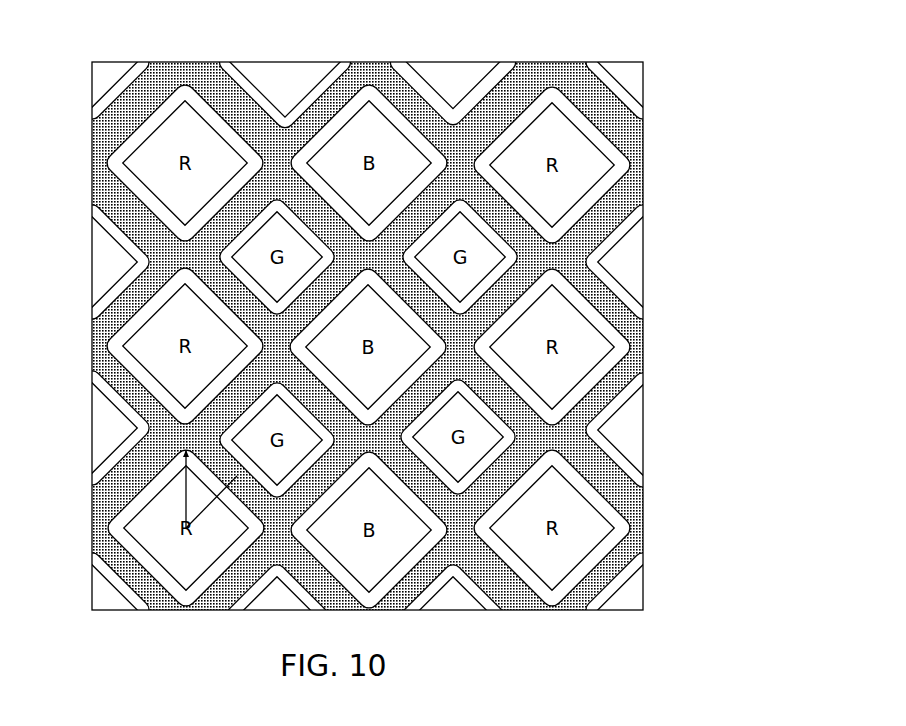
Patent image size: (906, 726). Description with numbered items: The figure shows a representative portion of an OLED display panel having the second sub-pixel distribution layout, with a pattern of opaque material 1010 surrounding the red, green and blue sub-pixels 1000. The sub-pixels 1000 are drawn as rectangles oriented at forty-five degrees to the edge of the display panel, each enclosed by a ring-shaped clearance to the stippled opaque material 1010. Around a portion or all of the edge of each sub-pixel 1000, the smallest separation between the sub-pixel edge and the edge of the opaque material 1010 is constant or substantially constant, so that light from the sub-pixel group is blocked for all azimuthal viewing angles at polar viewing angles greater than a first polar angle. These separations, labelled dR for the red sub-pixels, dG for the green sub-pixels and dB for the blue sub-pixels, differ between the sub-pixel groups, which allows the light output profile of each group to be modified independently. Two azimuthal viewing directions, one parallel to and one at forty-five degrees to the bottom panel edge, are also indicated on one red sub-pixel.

The sub-pixel 1000 is at (552, 347).
The opaque material 1010 is at (399, 341).
The red sub-pixel separation distance dR is at (254, 108).
The green sub-pixel separation distance dG is at (292, 173).
The blue sub-pixel separation distance dB is at (429, 189).